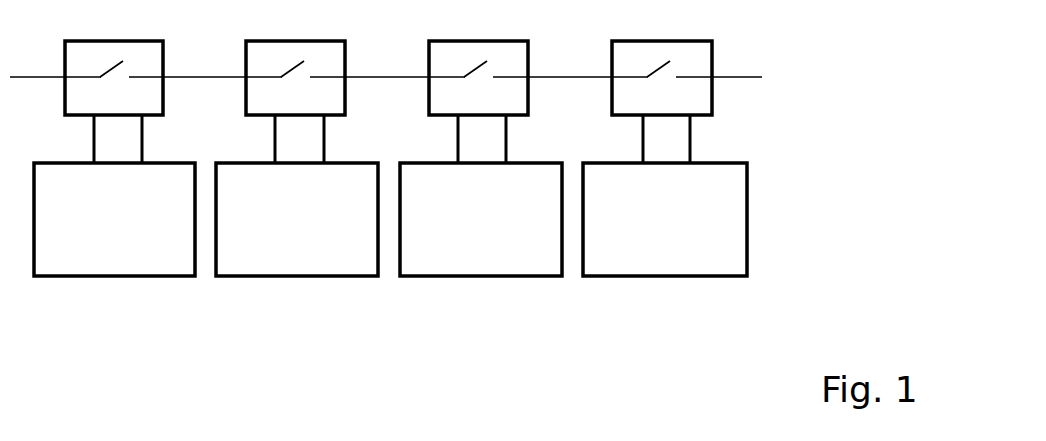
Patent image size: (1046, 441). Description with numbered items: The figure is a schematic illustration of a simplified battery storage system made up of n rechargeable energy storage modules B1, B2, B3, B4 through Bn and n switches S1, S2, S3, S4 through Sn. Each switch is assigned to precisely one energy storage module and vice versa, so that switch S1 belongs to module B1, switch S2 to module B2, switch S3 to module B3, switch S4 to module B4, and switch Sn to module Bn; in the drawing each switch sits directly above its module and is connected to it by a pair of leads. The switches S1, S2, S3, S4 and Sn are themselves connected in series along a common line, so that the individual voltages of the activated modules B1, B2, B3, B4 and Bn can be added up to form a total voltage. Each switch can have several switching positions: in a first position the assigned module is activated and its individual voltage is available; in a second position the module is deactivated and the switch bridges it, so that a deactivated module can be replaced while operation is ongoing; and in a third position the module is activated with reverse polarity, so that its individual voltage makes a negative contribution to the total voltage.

The switch S1 is at (100, 85).
The switch S2 is at (283, 85).
The switch S3 is at (469, 85).
The switch S4 is at (654, 85).
The switch Sn is at (739, 25).
The energy storage module B1 is at (111, 241).
The energy storage module B2 is at (292, 241).
The energy storage module B3 is at (476, 241).
The energy storage module B4 is at (658, 241).
The energy storage module Bn is at (742, 302).